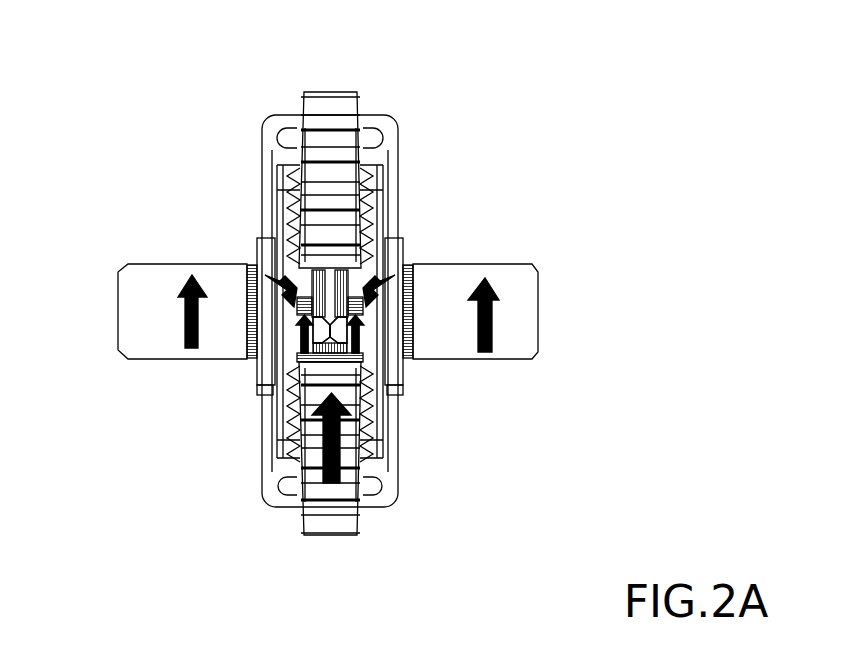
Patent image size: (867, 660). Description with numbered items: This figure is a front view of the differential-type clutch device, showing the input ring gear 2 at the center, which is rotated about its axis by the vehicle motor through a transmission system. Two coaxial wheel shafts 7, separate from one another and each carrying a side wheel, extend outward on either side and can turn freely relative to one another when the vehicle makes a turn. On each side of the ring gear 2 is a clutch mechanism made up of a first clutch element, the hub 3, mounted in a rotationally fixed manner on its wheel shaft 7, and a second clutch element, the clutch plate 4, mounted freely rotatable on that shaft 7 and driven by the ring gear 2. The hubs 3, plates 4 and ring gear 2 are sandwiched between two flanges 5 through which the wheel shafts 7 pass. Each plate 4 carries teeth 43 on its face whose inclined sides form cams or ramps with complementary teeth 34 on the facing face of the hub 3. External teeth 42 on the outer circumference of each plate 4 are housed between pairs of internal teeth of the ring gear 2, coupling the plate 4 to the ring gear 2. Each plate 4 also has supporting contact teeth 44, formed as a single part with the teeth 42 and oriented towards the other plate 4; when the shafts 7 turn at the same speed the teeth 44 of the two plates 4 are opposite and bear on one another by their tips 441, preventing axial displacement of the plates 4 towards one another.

The input ring gear 2 is at (325, 98).
The first clutch element 3 is at (283, 407).
The second clutch element 4 is at (302, 283).
The flange 5 is at (270, 130).
The wheel shaft 7 is at (150, 297).
The teeth 34 is at (370, 186).
The external teeth 42 is at (300, 340).
The teeth 43 is at (370, 182).
The teeth 44 is at (305, 322).
The tip 441 is at (355, 330).